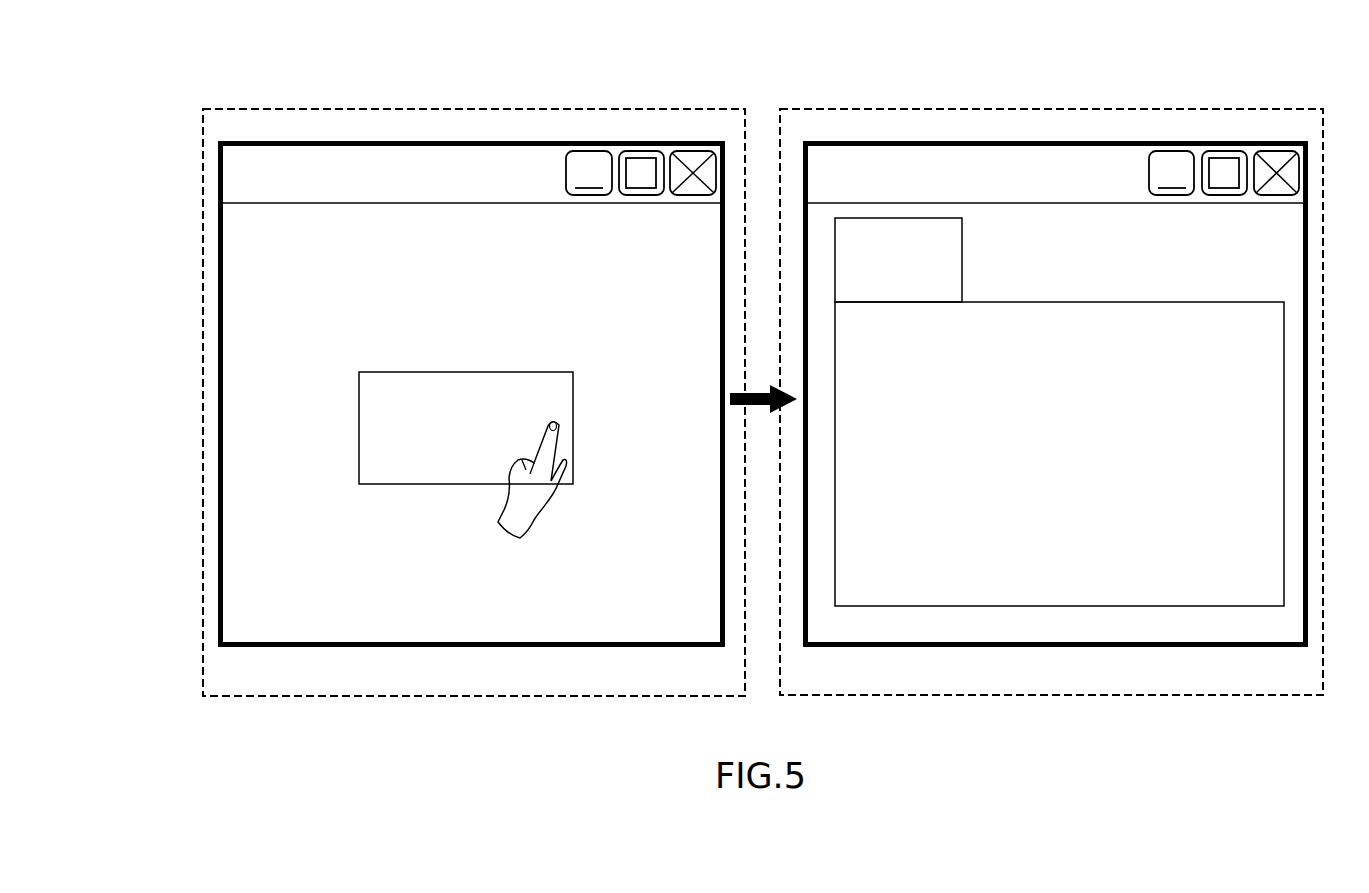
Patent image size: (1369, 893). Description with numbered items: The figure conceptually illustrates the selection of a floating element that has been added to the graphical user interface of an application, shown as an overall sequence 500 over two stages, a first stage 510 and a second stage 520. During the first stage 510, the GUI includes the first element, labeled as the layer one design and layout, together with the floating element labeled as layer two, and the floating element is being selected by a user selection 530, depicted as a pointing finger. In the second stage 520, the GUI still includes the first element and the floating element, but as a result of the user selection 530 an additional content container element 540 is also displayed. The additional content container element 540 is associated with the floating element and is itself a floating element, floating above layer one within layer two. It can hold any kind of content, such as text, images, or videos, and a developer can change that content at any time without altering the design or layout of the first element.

The process of transitioning a floating element into an additional content container 500 is at (450, 58).
The first stage 510 is at (537, 697).
The second stage 520 is at (988, 697).
The user selection 530 is at (558, 436).
The additional content container element 540 is at (1273, 598).